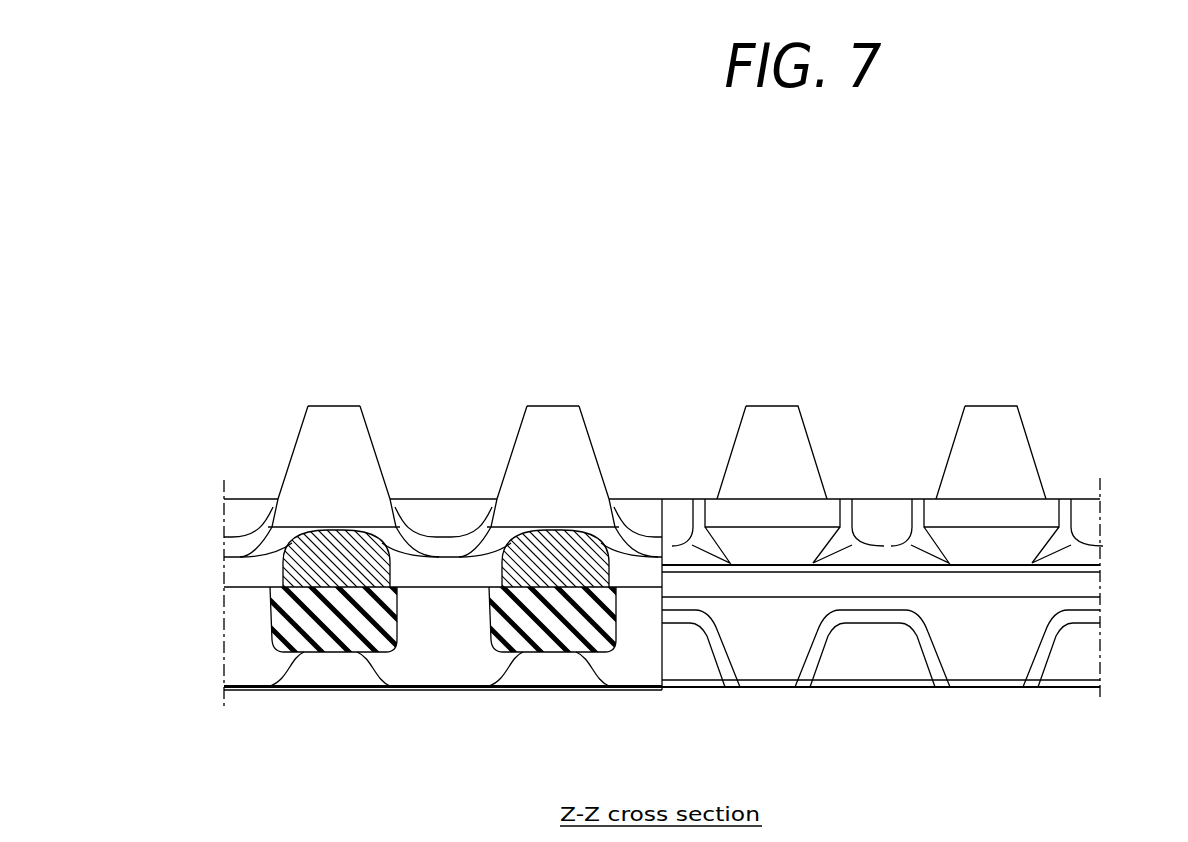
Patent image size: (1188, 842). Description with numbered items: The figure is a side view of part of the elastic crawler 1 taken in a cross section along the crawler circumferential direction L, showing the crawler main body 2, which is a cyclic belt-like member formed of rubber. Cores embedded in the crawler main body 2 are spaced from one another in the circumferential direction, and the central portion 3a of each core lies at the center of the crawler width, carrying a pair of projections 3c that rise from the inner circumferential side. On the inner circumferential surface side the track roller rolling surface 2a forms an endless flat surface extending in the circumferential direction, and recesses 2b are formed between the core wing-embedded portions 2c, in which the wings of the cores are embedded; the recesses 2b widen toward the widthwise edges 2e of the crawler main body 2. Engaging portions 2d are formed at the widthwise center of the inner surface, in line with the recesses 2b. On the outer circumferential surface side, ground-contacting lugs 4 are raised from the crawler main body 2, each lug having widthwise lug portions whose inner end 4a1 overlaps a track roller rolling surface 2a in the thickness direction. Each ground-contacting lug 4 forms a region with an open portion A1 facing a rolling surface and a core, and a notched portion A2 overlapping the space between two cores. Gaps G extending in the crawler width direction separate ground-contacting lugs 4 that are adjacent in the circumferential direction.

The elastic crawler 1 is at (888, 353).
The crawler main body 2 is at (1082, 585).
The track roller rolling surface 2a is at (252, 497).
The recess 2b is at (678, 548).
The core wing-embedded portion 2c is at (770, 540).
The engaging portion 2d is at (247, 572).
The widthwise edge 2e is at (1005, 574).
The central portion of core 3a is at (338, 565).
The projection 3c is at (333, 447).
The ground-contacting lug 4 is at (247, 690).
The inner end of widthwise lug portion 4a1 is at (443, 688).
The open portion A1 is at (532, 672).
The notched portion A2 is at (876, 645).
The gap G is at (675, 643).
The crawler circumferential direction L is at (760, 302).